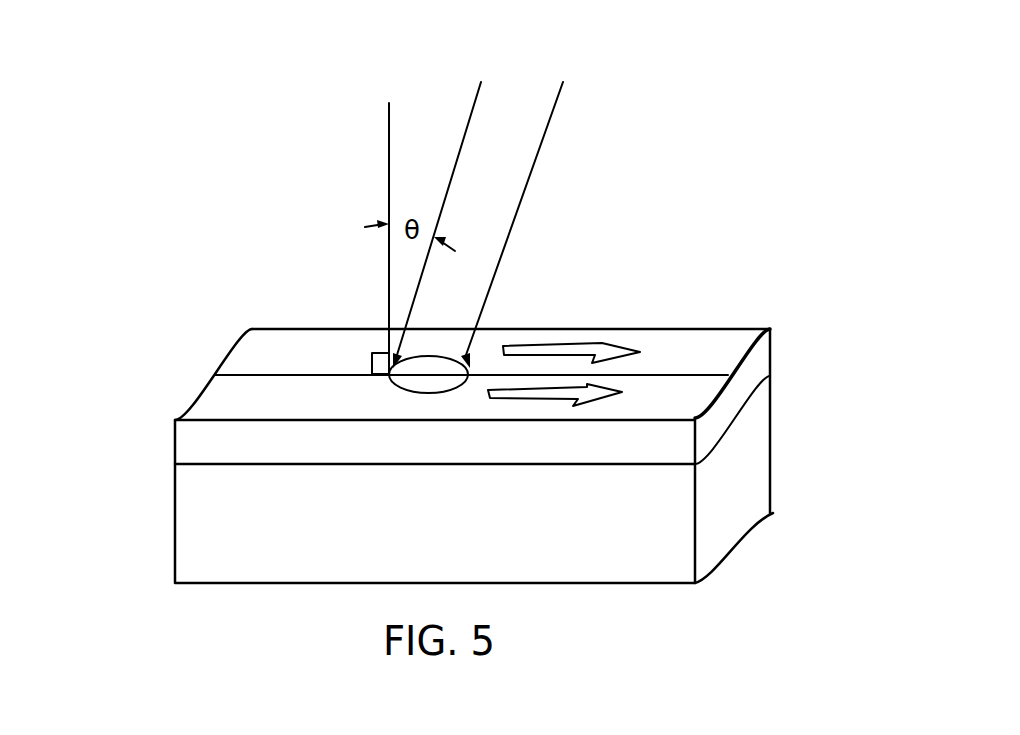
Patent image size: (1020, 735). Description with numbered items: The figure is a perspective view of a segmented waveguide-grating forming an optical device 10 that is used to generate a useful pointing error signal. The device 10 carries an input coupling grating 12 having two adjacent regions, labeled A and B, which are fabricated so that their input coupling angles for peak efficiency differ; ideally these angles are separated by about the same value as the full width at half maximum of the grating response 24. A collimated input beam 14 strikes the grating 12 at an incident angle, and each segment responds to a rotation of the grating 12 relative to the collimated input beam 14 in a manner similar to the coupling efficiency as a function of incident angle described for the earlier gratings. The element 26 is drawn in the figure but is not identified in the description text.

The optical device 10 is at (704, 253).
The input coupling grating 12 is at (381, 352).
The collimated input beam 14 is at (518, 90).
The grating response 24 is at (400, 388).
The track 26 is at (544, 405).